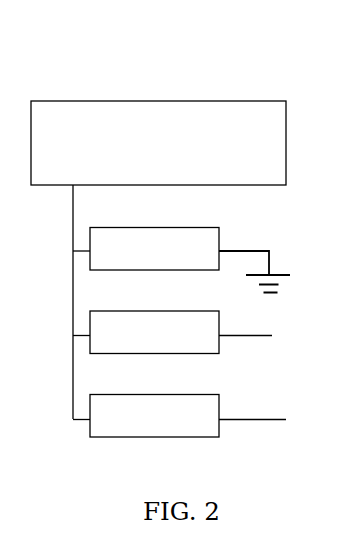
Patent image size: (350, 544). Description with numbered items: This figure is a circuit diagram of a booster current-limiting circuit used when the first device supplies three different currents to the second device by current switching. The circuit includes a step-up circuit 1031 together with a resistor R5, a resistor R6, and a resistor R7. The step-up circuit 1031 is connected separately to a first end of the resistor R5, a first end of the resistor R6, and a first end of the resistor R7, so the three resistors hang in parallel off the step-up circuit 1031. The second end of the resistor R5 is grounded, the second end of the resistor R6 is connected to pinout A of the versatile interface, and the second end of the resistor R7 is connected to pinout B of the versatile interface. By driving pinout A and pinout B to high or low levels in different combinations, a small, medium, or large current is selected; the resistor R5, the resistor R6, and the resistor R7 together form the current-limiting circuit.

The step-up circuit 1031 is at (157, 101).
The resistor R5 is at (181, 259).
The resistor R6 is at (191, 332).
The resistor R7 is at (196, 416).